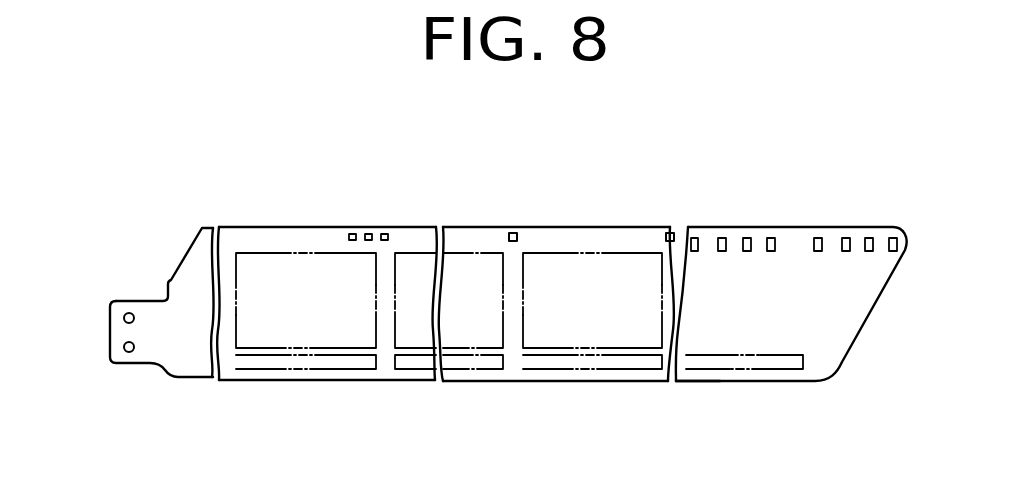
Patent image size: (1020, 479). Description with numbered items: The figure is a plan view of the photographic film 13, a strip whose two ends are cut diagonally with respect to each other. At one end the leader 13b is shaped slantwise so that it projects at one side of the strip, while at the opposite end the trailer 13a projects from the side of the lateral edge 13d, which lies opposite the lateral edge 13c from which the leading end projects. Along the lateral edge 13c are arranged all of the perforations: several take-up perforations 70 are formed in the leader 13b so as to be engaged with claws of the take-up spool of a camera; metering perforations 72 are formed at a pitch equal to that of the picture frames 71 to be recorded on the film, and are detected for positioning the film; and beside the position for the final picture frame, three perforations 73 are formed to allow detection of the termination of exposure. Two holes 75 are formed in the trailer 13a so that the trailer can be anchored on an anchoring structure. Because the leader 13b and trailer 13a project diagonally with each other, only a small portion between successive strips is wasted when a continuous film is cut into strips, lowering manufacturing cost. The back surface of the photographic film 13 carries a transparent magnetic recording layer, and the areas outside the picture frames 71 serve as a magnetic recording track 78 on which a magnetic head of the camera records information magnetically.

The photographic film 13 is at (552, 227).
The trailer 13a is at (110, 325).
The leader 13b is at (855, 332).
The lateral edge 13c is at (613, 227).
The lateral edge 13d is at (686, 383).
The take-up perforations 70 is at (898, 225).
The picture frames 71 is at (252, 350).
The metering perforations 72 is at (513, 232).
The perforations 73 is at (398, 218).
The holes 75 is at (129, 312).
The magnetic recording track 78 is at (315, 363).